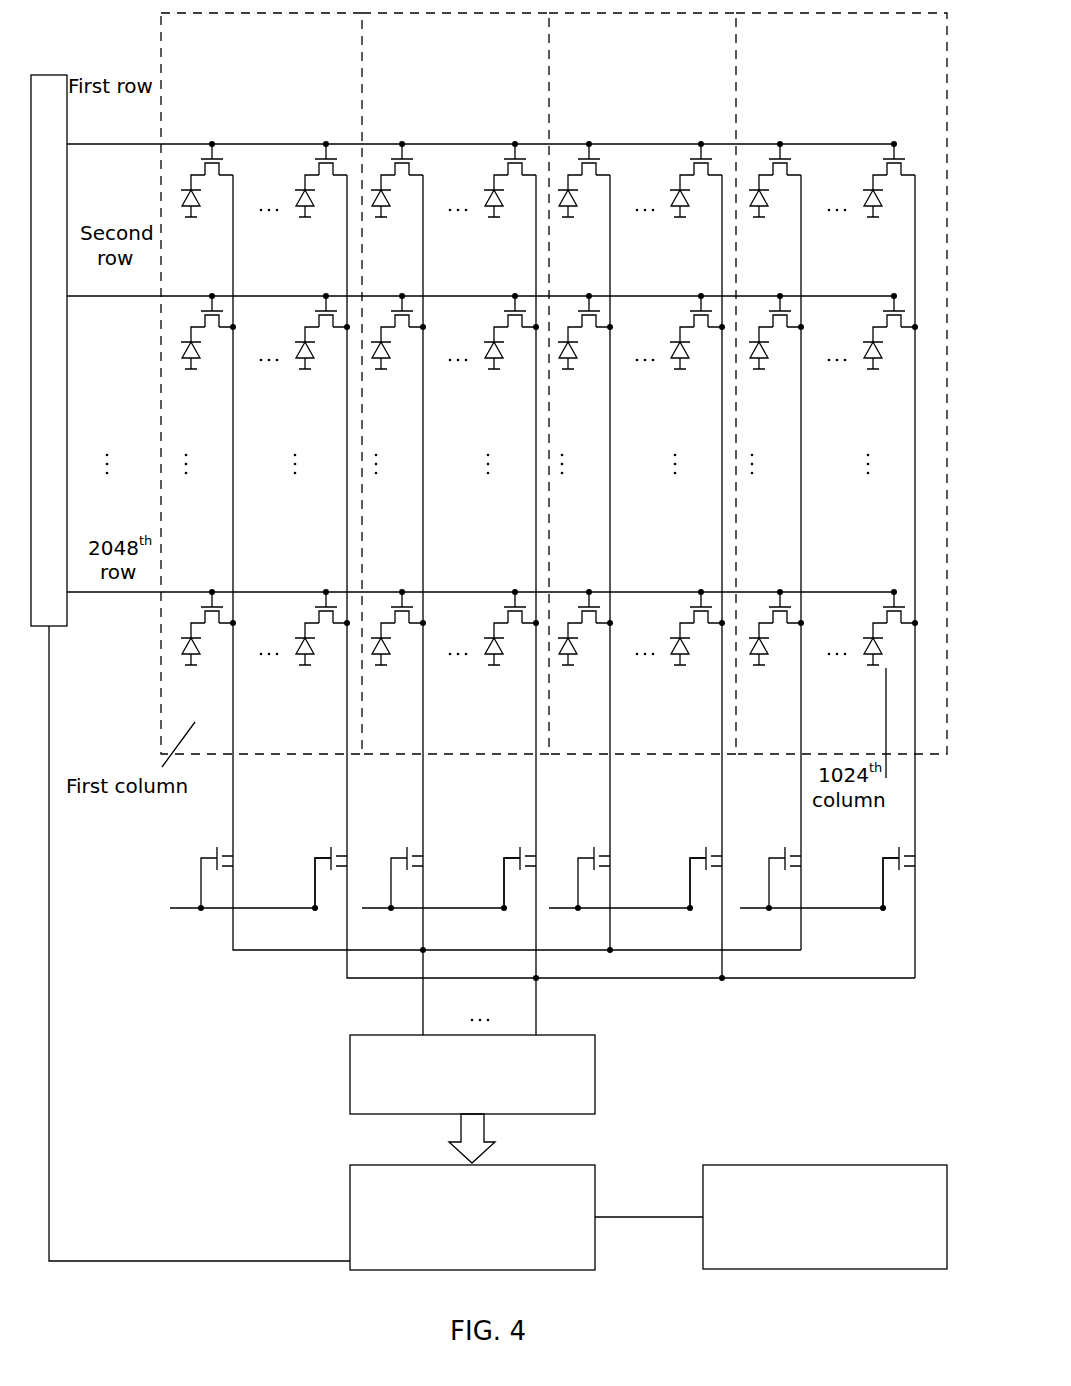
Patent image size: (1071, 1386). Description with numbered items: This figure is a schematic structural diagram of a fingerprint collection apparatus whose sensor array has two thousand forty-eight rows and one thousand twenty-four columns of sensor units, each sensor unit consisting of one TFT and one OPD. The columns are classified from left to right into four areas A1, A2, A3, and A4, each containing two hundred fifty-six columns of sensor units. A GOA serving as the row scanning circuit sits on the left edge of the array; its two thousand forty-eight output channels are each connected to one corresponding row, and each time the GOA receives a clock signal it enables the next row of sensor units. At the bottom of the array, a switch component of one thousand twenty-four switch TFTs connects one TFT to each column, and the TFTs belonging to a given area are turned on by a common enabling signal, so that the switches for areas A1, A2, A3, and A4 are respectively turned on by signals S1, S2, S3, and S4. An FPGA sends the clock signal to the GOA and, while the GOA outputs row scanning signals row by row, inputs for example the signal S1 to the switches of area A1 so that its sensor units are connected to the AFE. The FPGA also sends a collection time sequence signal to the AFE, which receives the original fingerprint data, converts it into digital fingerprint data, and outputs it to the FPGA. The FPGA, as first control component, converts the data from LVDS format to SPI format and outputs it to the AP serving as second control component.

The element GOA is at (50, 74).
The area A1 is at (261, 383).
The area A2 is at (455, 383).
The area A3 is at (642, 383).
The area A4 is at (841, 383).
The signal S1 is at (350, 1176).
The signal S2 is at (305, 1199).
The signal S3 is at (305, 1223).
The signal S4 is at (305, 1247).
The element AFE is at (472, 1074).
The element FPGA is at (472, 1217).
The application processor AP is at (825, 1217).